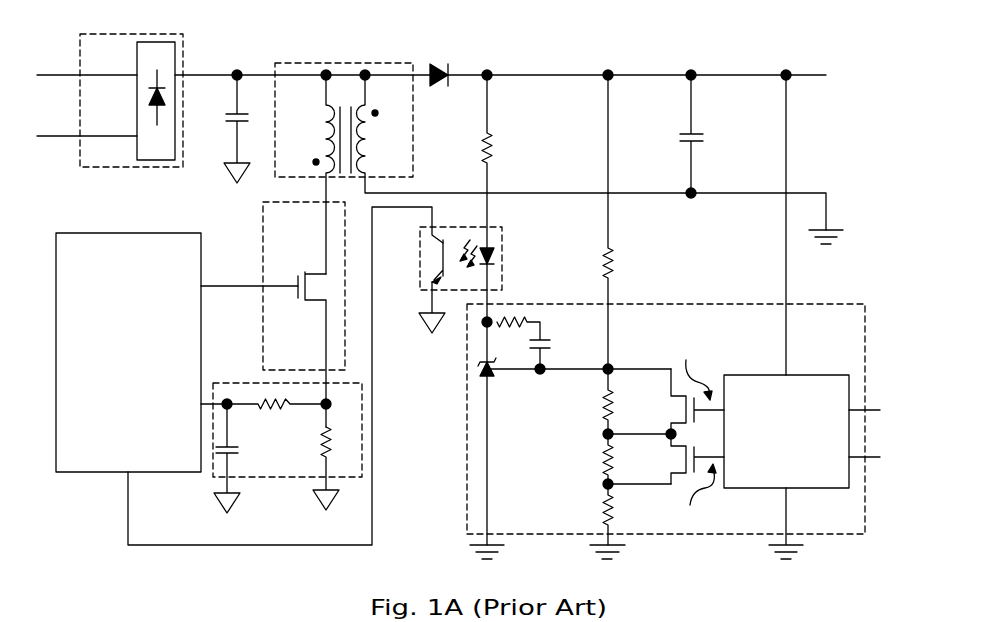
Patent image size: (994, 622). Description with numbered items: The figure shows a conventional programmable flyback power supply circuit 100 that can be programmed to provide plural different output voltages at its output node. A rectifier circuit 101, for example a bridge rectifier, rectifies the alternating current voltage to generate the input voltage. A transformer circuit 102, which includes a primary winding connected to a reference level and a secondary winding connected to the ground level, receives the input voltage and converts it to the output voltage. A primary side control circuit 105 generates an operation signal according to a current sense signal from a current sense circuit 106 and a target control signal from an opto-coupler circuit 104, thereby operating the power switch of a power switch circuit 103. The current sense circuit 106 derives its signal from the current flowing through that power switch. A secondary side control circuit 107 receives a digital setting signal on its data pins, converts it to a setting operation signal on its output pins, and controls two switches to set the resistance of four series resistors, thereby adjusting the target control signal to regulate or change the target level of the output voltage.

The flyback power supply circuit 100 is at (857, 33).
The rectifier circuit 101 is at (115, 164).
The transformer circuit 102 is at (357, 63).
The power switch circuit 103 is at (305, 237).
The opto-coupler circuit 104 is at (420, 252).
The primary side control circuit 105 is at (100, 265).
The current sense circuit 106 is at (262, 383).
The secondary side control circuit 107 is at (848, 529).